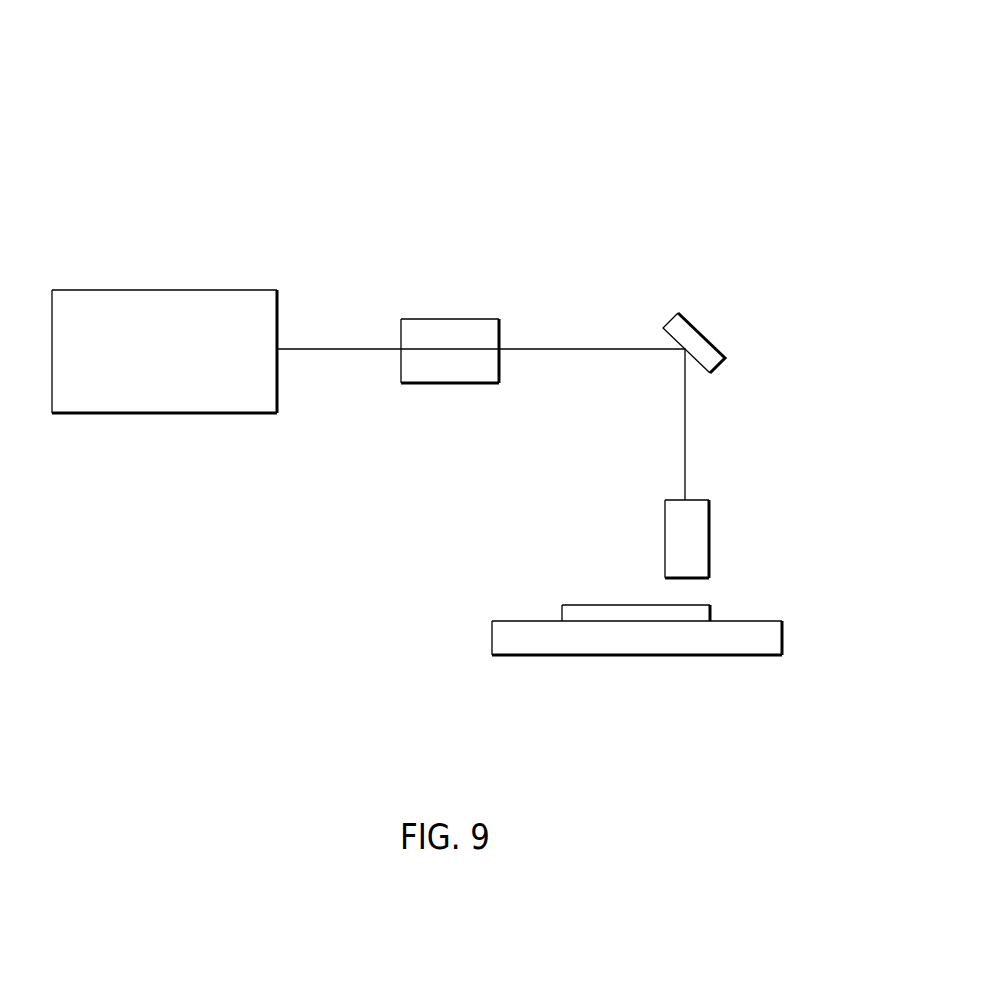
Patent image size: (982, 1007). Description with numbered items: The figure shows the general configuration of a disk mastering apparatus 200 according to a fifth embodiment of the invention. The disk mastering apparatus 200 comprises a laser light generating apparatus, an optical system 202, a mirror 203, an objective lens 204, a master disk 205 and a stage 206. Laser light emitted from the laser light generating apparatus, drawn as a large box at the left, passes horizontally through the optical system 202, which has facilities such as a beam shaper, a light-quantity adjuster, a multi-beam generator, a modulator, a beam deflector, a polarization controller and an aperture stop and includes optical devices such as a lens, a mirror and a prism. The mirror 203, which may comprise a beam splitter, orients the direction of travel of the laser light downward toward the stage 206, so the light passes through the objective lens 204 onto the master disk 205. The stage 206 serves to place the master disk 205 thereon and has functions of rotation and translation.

The disk mastering apparatus 200 is at (211, 126).
The optical system 202 is at (476, 319).
The mirror 203 is at (716, 338).
The objective lens 204 is at (711, 520).
The master disk 205 is at (712, 611).
The stage 206 is at (784, 630).